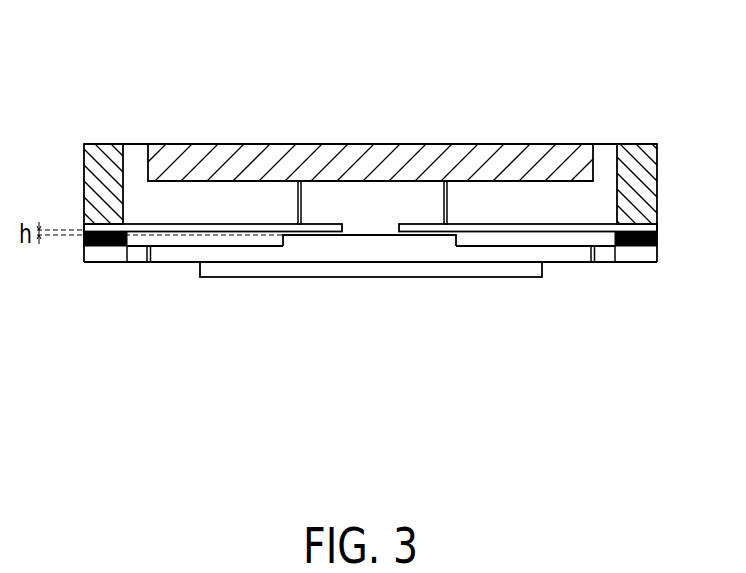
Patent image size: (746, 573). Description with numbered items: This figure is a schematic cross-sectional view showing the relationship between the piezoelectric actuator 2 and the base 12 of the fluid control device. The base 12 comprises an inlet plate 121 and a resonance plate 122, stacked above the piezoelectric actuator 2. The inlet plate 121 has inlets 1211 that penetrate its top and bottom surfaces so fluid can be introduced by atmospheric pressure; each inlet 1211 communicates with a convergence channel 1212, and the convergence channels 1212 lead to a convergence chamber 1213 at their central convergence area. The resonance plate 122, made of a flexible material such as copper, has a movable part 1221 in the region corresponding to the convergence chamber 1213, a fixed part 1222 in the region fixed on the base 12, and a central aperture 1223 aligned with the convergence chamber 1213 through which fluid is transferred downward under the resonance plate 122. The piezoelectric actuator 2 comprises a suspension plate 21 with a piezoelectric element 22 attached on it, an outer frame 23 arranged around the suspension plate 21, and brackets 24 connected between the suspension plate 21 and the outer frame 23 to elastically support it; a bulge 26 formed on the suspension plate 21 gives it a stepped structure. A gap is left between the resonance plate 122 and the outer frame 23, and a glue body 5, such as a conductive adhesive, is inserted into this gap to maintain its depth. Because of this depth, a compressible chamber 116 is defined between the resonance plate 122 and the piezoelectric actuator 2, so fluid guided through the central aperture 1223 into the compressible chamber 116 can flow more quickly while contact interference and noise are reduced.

The piezoelectric actuator 2 is at (157, 298).
The glue body 5 is at (658, 238).
The base 12 is at (426, 57).
The inlet plate 121 is at (377, 153).
The resonance plate 122 is at (412, 223).
The inlet 1211 is at (135, 148).
The convergence channel 1212 is at (213, 205).
The convergence chamber 1213 is at (327, 192).
The movable part 1221 is at (335, 233).
The fixed part 1222 is at (128, 229).
The central aperture 1223 is at (366, 228).
The compressible chamber 116 is at (242, 242).
The suspension plate 21 is at (383, 256).
The piezoelectric element 22 is at (512, 269).
The outer frame 23 is at (632, 254).
The bracket 24 is at (603, 256).
The bulge 26 is at (432, 248).